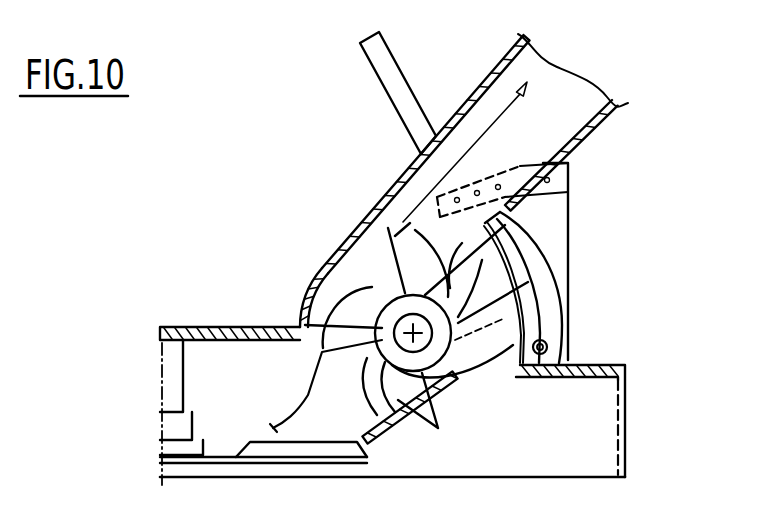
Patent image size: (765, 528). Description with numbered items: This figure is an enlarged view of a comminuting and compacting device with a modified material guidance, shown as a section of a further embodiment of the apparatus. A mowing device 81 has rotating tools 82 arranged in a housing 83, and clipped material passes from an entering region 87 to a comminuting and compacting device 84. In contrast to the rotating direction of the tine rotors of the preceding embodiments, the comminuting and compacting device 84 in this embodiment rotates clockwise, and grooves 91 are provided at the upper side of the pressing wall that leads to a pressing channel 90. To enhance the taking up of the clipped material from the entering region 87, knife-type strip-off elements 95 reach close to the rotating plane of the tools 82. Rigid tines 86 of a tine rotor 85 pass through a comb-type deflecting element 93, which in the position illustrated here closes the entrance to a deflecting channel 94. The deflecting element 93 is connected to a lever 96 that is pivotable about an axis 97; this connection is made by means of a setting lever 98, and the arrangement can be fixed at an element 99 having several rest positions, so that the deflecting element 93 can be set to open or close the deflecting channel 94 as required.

The mowing device 81 is at (192, 312).
The rotating tools 82 is at (262, 440).
The housing 83 is at (177, 325).
The comminuting and compacting device 84 is at (320, 234).
The tine rotor 85 is at (312, 262).
The rigid tines 86 is at (322, 272).
The entering region 87 is at (350, 422).
The pressing channel 90 is at (518, 73).
The grooves 91 is at (333, 242).
The comb-type deflecting element 93 is at (533, 237).
The deflecting channel 94 is at (533, 272).
The knife-type strip-off elements 95 is at (550, 307).
The lever 96 is at (553, 328).
The axis 97 is at (548, 349).
The setting lever 98 is at (388, 84).
The element having several rest positions 99 is at (553, 183).